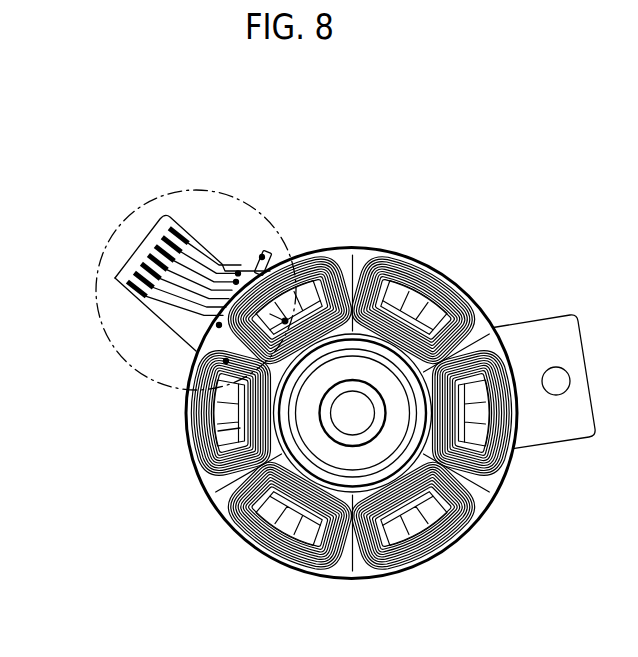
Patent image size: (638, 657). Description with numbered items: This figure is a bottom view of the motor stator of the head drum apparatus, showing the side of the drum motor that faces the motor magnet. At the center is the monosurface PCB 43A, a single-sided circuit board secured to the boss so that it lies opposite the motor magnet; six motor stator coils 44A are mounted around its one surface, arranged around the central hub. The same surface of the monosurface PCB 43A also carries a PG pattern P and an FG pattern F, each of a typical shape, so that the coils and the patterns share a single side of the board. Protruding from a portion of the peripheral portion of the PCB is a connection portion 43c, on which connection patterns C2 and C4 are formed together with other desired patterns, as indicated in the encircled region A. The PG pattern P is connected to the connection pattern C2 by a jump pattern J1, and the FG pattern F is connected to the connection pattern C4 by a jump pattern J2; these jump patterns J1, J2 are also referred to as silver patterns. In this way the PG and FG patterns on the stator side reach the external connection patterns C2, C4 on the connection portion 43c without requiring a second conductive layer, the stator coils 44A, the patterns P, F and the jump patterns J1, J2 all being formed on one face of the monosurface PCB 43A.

The monosurface PCB 43A is at (350, 246).
The motor stator coils 44A is at (430, 262).
The connection portion 43c is at (137, 297).
The connection pattern C2 is at (153, 223).
The connection pattern C4 is at (133, 237).
The jump pattern J1 is at (226, 252).
The jump pattern J2 is at (216, 353).
The PG pattern P is at (278, 312).
The FG pattern F is at (210, 423).
The detail region A is at (88, 282).